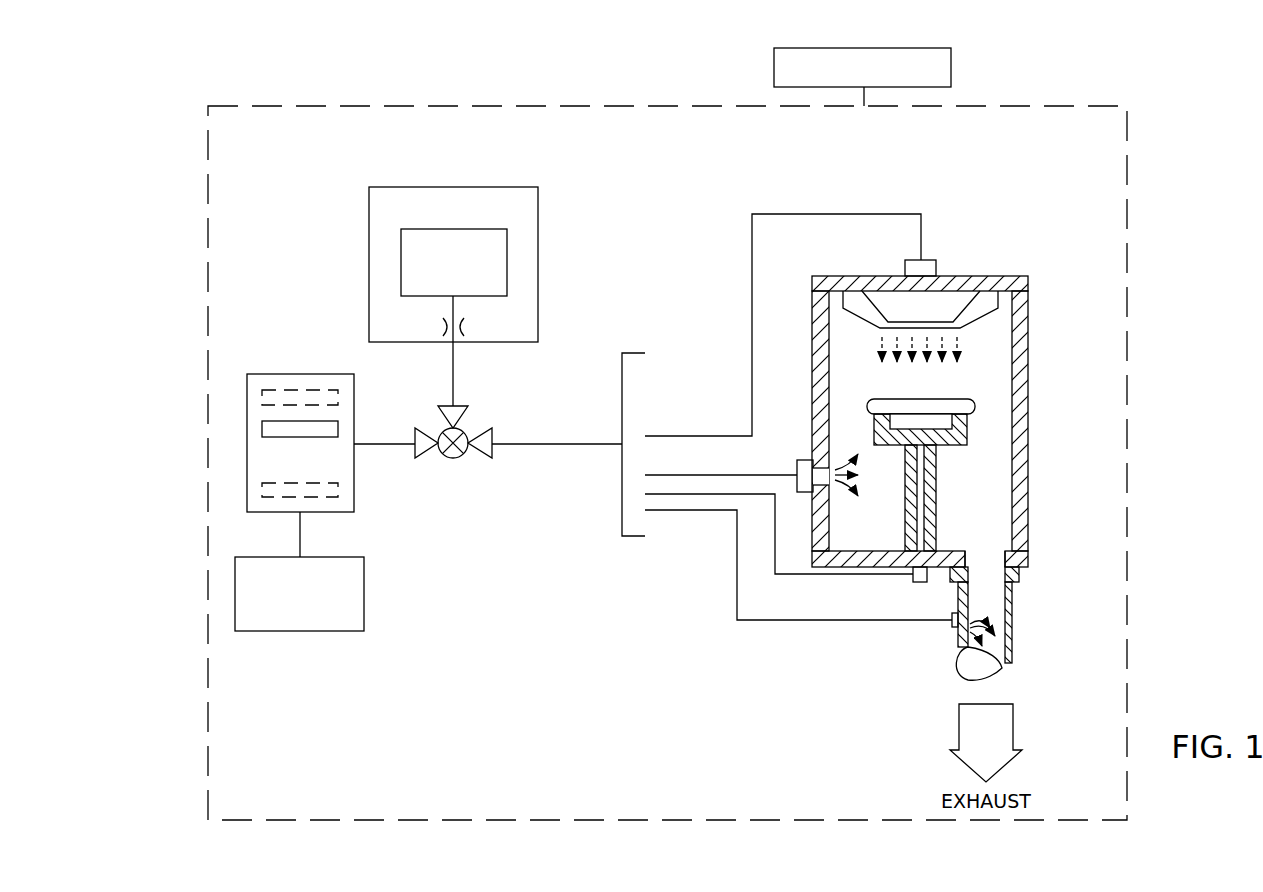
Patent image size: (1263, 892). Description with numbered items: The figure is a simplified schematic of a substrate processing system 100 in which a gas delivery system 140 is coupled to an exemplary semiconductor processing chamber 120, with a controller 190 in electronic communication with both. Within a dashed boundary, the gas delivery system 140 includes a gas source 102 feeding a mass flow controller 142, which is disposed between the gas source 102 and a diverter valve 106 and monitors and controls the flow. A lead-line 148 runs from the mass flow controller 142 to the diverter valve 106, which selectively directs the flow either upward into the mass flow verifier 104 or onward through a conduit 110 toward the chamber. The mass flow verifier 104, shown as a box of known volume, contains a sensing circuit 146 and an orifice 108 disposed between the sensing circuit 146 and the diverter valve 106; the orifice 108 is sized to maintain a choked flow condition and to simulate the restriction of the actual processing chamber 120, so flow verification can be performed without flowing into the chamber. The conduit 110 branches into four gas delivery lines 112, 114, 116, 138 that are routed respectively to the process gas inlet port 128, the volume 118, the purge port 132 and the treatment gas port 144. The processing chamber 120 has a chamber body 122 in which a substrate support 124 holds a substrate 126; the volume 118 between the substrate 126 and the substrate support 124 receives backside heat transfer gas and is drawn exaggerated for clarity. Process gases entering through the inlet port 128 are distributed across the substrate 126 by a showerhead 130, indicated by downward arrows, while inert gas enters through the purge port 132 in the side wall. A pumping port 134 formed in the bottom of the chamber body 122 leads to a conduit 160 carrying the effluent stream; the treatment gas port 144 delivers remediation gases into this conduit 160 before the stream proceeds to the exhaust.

The substrate processing system 100 is at (168, 141).
The gas source 102 is at (318, 632).
The mass flow verifier 104 is at (483, 182).
The diverter valve 106 is at (452, 460).
The orifice 108 is at (480, 327).
The conduit 110 is at (555, 450).
The gas delivery line 112 is at (752, 360).
The gas delivery line 114 is at (697, 475).
The gas delivery line 116 is at (800, 574).
The volume 118 is at (938, 420).
The processing chamber 120 is at (973, 224).
The chamber body 122 is at (1015, 393).
The substrate support 124 is at (937, 490).
The substrate 126 is at (975, 407).
The process gas inlet port 128 is at (912, 284).
The showerhead 130 is at (975, 318).
The purge port 132 is at (813, 462).
The pumping port 134 is at (987, 551).
The gas delivery line 138 is at (850, 620).
The gas delivery system 140 is at (325, 207).
The mass flow controller 142 is at (277, 374).
The treatment gas port 144 is at (968, 605).
The sensing circuit 146 is at (507, 262).
The lead-line 148 is at (377, 440).
The conduit 160 is at (958, 645).
The controller 190 is at (951, 67).